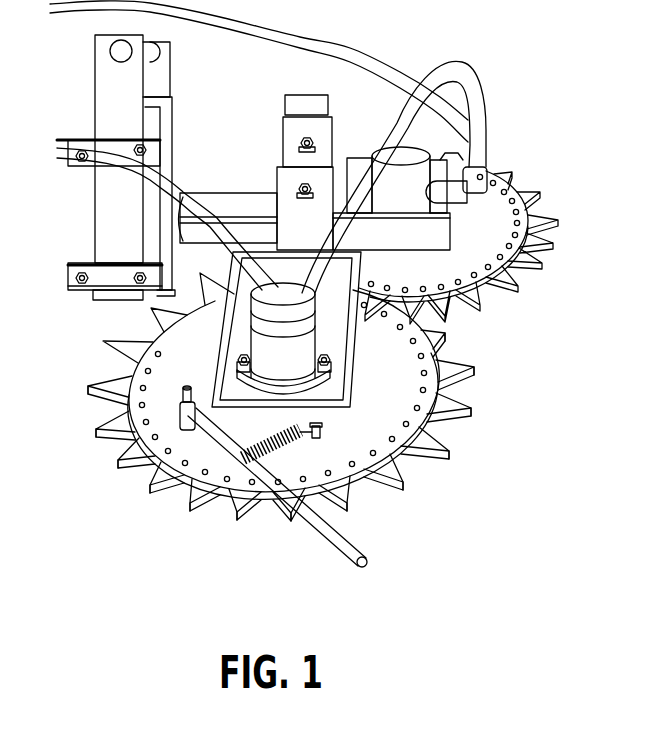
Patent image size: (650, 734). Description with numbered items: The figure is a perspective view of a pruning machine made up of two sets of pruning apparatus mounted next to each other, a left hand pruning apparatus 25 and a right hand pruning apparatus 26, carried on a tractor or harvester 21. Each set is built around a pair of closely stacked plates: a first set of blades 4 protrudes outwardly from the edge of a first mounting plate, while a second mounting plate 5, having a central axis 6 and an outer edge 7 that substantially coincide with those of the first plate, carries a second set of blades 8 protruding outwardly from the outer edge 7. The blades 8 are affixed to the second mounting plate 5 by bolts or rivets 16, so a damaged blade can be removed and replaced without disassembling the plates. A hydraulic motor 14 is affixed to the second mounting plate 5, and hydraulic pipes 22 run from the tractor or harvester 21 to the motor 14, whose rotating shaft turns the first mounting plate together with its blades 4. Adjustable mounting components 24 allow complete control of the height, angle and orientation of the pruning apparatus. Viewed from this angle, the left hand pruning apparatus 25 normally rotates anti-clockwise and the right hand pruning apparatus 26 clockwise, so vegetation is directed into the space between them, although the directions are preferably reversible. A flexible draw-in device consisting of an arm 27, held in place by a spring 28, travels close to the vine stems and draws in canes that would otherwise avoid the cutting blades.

The first set of blades 4 is at (385, 480).
The second mounting plate 5 is at (183, 369).
The central axis 6 is at (296, 360).
The outer edge 7 is at (305, 478).
The second set of blades 8 is at (405, 485).
The hydraulic motor 14 is at (308, 323).
The bolts or rivets 16 is at (380, 455).
The tractor or harvester 21 is at (107, 223).
The hydraulic pipes 22 is at (243, 25).
The adjustable mounting components 24 is at (172, 122).
The left hand pruning apparatus 25 is at (398, 432).
The right hand pruning apparatus 26 is at (547, 248).
The arm 27 is at (343, 560).
The spring 28 is at (287, 457).